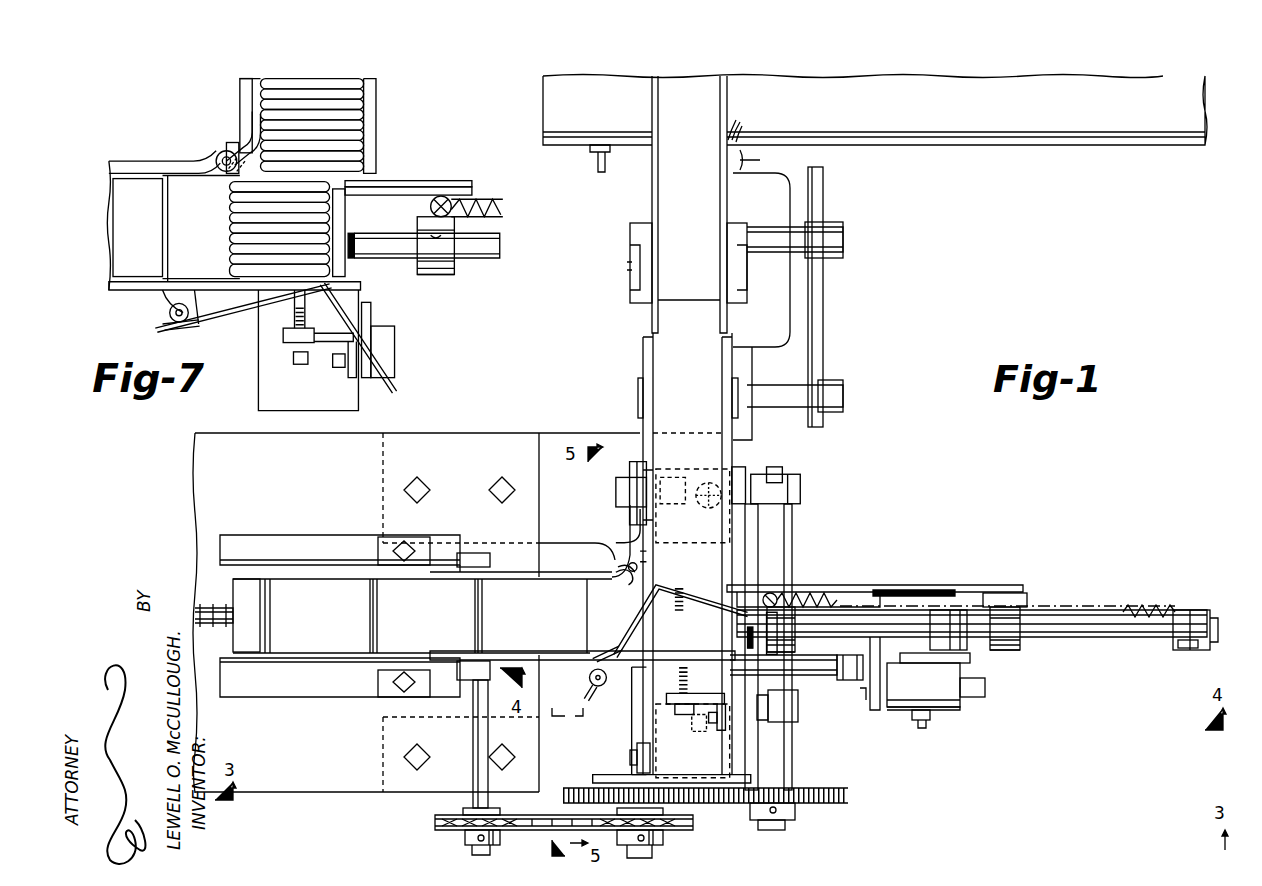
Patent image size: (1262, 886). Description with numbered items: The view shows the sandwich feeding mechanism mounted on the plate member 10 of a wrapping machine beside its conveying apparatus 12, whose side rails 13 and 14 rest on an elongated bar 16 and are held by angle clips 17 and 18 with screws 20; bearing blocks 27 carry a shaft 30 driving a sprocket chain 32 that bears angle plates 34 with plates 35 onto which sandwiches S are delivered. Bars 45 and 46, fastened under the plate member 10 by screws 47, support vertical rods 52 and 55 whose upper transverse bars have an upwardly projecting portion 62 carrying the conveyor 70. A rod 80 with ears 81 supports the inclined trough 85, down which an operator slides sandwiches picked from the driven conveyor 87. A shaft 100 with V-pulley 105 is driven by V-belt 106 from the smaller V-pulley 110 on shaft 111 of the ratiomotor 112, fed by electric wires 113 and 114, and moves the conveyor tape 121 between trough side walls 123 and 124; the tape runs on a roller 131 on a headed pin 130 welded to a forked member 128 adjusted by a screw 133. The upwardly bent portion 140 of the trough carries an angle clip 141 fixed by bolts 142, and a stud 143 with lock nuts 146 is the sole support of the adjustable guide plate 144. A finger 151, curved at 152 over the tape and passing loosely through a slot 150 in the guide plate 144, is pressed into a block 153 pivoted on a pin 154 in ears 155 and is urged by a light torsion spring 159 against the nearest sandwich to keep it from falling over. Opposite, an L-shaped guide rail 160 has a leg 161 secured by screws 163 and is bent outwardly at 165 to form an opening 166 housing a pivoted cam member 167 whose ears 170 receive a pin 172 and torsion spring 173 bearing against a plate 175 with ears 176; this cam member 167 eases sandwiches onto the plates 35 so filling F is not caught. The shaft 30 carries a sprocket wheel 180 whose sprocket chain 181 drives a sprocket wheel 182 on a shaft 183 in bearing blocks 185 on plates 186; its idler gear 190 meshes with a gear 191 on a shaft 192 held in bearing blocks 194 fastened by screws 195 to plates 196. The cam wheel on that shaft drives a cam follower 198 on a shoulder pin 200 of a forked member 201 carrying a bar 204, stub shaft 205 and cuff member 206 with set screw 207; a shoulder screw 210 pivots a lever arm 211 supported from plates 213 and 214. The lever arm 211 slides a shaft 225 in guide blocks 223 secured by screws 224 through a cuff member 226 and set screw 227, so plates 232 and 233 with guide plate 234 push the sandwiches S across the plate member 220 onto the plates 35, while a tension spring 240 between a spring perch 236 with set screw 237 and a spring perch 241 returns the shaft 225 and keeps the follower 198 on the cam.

In FIG. 1, the plate member 10 is at (318, 800).
In FIG. 1, the conveying apparatus 12 is at (264, 688).
In FIG. 1, the side rail 13 is at (267, 667).
In FIG. 1, the side rail 14 is at (303, 565).
In FIG. 1, the elongated bar 16 is at (298, 536).
In FIG. 1, the angle clip 17 is at (378, 680).
In FIG. 1, the angle clip 18 is at (378, 549).
In FIG. 1, the screws 20 is at (393, 537).
In FIG. 1, the bearing blocks 27 is at (452, 554).
In FIG. 1, the shaft 30 is at (490, 740).
In FIG. 1, the sprocket chain 32 is at (218, 625).
In FIG. 1, the angle plates 34 is at (270, 622).
In FIG. 7, the plate 35 is at (118, 246).
In FIG. 1, the plate 35 is at (230, 600).
In FIG. 1, the horizontally disposed bar 45 is at (553, 440).
In FIG. 1, the horizontally disposed bar 46 is at (567, 701).
In FIG. 1, the screws 47 is at (425, 481).
In FIG. 1, the vertically disposed rod 52 is at (691, 612).
In FIG. 1, the rod 55 is at (700, 700).
In FIG. 1, the upwardly projecting portion 62 is at (730, 501).
In FIG. 1, the conveyor 70 is at (640, 360).
In FIG. 1, the rod 80 is at (627, 268).
In FIG. 1, the ear 81 is at (630, 253).
In FIG. 1, the trough 85 is at (660, 197).
In FIG. 1, the driven conveyor 87 is at (990, 138).
In FIG. 1, the shaft 100 is at (846, 245).
In FIG. 1, the V-pulley 105 is at (824, 287).
In FIG. 1, the V-belt 106 is at (824, 338).
In FIG. 1, the V-pulley 110 is at (822, 378).
In FIG. 1, the shaft 111 is at (843, 400).
In FIG. 1, the ratiomotor 112 is at (756, 340).
In FIG. 1, the electric wire 113 is at (752, 163).
In FIG. 1, the electric wire 114 is at (728, 165).
In FIG. 7, the conveyor tape 121 is at (258, 390).
In FIG. 1, the conveyor tape 121 is at (650, 343).
In FIG. 1, the side wall 123 is at (652, 393).
In FIG. 1, the side wall 124 is at (722, 363).
In FIG. 7, the forked member 128 is at (240, 100).
In FIG. 1, the forked member 128 is at (775, 758).
In FIG. 1, the headed pin 130 is at (630, 748).
In FIG. 1, the roller 131 is at (735, 765).
In FIG. 1, the screw 133 is at (760, 738).
In FIG. 7, the upwardly bent portion 140 is at (360, 305).
In FIG. 7, the angle clip 141 is at (330, 320).
In FIG. 1, the angle clip 141 is at (695, 680).
In FIG. 7, the bolts 142 is at (331, 360).
In FIG. 1, the bolts 142 is at (705, 710).
In FIG. 7, the stud 143 is at (294, 356).
In FIG. 1, the stud 143 is at (666, 679).
In FIG. 7, the adjustable guide plate 144 is at (242, 298).
In FIG. 1, the adjustable guide plate 144 is at (563, 639).
In FIG. 7, the lock nuts 146 is at (284, 338).
In FIG. 1, the lock nuts 146 is at (671, 709).
In FIG. 1, the elongated slot 150 is at (605, 645).
In FIG. 7, the finger 151 is at (385, 384).
In FIG. 1, the finger 151 is at (703, 590).
In FIG. 7, the curved portion 152 is at (317, 309).
In FIG. 1, the curved portion 152 is at (671, 601).
In FIG. 7, the block 153 is at (194, 320).
In FIG. 7, the pin 154 is at (165, 316).
In FIG. 7, the ear 155 is at (182, 320).
In FIG. 1, the ear 155 is at (583, 672).
In FIG. 7, the torsion spring 159 is at (160, 294).
In FIG. 1, the torsion spring 159 is at (585, 662).
In FIG. 7, the L-shaped guide rail 160 is at (165, 164).
In FIG. 7, the leg 161 is at (236, 116).
In FIG. 1, the leg 161 is at (622, 527).
In FIG. 1, the screws 163 is at (630, 470).
In FIG. 1, the outward bend 165 is at (612, 545).
In FIG. 1, the opening 166 is at (622, 572).
In FIG. 1, the pivoted cam member 167 is at (640, 565).
In FIG. 7, the ear 170 is at (212, 150).
In FIG. 1, the ear 170 is at (628, 580).
In FIG. 7, the pin 172 is at (235, 173).
In FIG. 7, the torsion spring 173 is at (220, 142).
In FIG. 7, the vertically disposed plate 175 is at (236, 84).
In FIG. 1, the ear 176 is at (642, 548).
In FIG. 1, the sprocket wheel 180 is at (463, 836).
In FIG. 1, the sprocket chain 181 is at (546, 830).
In FIG. 1, the sprocket wheel 182 is at (663, 836).
In FIG. 1, the shaft 183 is at (652, 846).
In FIG. 1, the bearing blocks 185 is at (612, 493).
In FIG. 1, the plates 186 is at (691, 612).
In FIG. 1, the idler gear 190 is at (600, 788).
In FIG. 1, the gear 191 is at (809, 806).
In FIG. 1, the shaft 192 is at (769, 830).
In FIG. 1, the bearing blocks 194 is at (788, 485).
In FIG. 1, the screws 195 is at (753, 480).
In FIG. 1, the plates 196 is at (700, 472).
In FIG. 1, the cam follower 198 is at (838, 685).
In FIG. 1, the shoulder pin 200 is at (848, 699).
In FIG. 1, the forked member 201 is at (880, 647).
In FIG. 1, the bar 204 is at (872, 710).
In FIG. 1, the stub shaft 205 is at (985, 684).
In FIG. 1, the cuff member 206 is at (950, 710).
In FIG. 1, the set screw 207 is at (920, 722).
In FIG. 1, the shoulder screw 210 is at (907, 663).
In FIG. 1, the lever arm 211 is at (970, 663).
In FIG. 1, the plate 213 is at (937, 590).
In FIG. 1, the plate 214 is at (1009, 595).
In FIG. 7, the plate member 220 is at (170, 263).
In FIG. 1, the plate member 220 is at (641, 719).
In FIG. 7, the guide blocks 223 is at (432, 270).
In FIG. 1, the guide blocks 223 is at (788, 647).
In FIG. 7, the screws 224 is at (435, 246).
In FIG. 1, the screws 224 is at (896, 629).
In FIG. 7, the shaft 225 is at (490, 246).
In FIG. 1, the shaft 225 is at (1120, 637).
In FIG. 1, the cuff member 226 is at (968, 612).
In FIG. 1, the set screw 227 is at (960, 700).
In FIG. 7, the plate 232 is at (348, 240).
In FIG. 1, the plate 232 is at (735, 628).
In FIG. 7, the plate 233 is at (340, 221).
In FIG. 1, the plate 233 is at (735, 607).
In FIG. 7, the guide plate 234 is at (417, 172).
In FIG. 1, the guide plate 234 is at (810, 578).
In FIG. 1, the spring perch 236 is at (1200, 610).
In FIG. 1, the set screw 237 is at (1188, 648).
In FIG. 7, the tension spring 240 is at (470, 197).
In FIG. 1, the tension spring 240 is at (825, 595).
In FIG. 7, the spring perch 241 is at (432, 197).
In FIG. 1, the spring perch 241 is at (770, 600).
In FIG. 7, the sandwiches S is at (298, 178).
In FIG. 7, the filling F is at (352, 85).